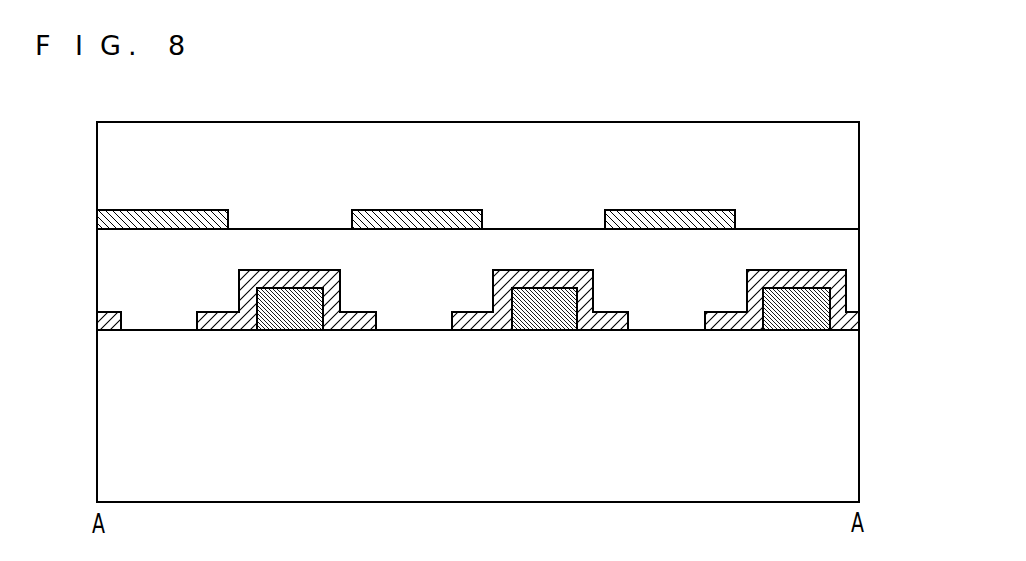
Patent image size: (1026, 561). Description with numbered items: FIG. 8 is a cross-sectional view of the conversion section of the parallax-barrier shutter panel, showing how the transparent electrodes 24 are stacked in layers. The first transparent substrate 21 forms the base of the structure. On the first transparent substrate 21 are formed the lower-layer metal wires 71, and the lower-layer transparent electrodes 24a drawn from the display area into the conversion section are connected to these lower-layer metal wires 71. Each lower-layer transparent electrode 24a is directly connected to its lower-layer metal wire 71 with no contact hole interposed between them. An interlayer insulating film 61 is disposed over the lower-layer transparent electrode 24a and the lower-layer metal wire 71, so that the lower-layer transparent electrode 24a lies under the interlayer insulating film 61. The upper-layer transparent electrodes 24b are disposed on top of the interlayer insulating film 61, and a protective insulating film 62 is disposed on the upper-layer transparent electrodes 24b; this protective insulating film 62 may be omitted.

The first transparent substrate 21 is at (843, 437).
The transparent electrode 24 is at (463, 206).
The lower-layer transparent electrode 24a is at (557, 270).
The upper-layer transparent electrode 24b is at (408, 210).
The interlayer insulating film 61 is at (843, 253).
The protective insulating film 62 is at (843, 170).
The lower-layer metal wire 71 is at (265, 299).